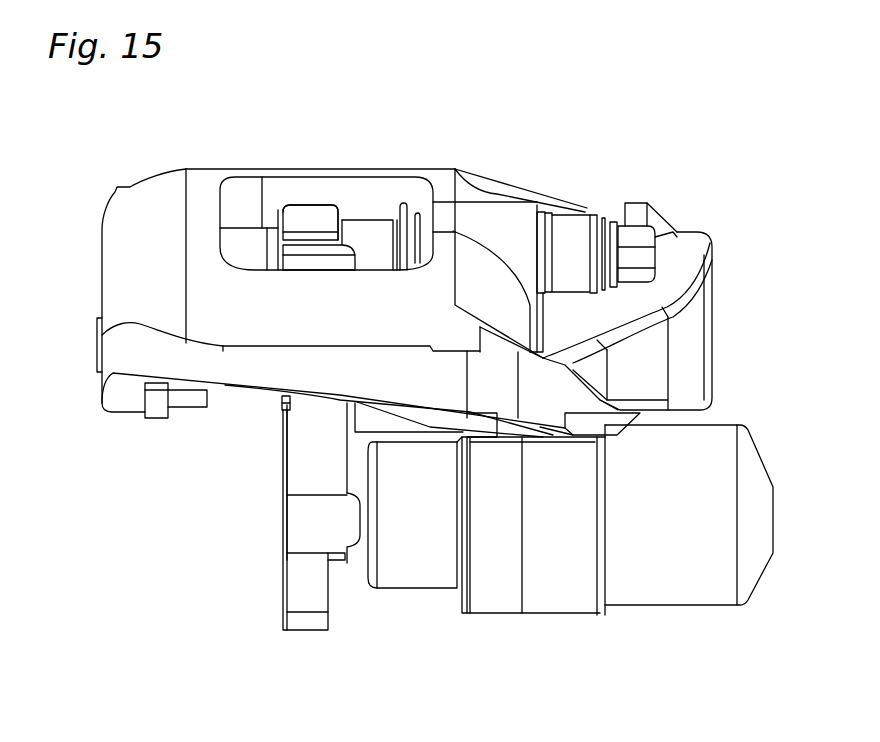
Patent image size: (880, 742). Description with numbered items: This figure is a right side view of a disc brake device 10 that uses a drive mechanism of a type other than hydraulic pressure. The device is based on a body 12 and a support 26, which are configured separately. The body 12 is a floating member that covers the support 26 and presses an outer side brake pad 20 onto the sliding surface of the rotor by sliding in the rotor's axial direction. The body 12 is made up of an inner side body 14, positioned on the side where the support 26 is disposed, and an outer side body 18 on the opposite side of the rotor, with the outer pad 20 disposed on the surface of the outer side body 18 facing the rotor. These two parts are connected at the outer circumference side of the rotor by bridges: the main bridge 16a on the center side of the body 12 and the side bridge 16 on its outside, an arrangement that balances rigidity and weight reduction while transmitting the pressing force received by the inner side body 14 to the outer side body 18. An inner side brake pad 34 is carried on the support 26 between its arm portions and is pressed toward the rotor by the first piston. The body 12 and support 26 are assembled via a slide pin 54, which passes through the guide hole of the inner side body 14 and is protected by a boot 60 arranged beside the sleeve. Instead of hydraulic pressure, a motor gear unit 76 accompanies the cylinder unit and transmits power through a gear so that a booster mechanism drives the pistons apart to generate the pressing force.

The disc brake device 10 is at (490, 128).
The body 12 is at (220, 168).
The inner side body 14 is at (697, 344).
The side bridge 16 is at (301, 313).
The main bridge 16a is at (360, 187).
The outer side body 18 is at (101, 272).
The outer side brake pad 20 is at (160, 421).
The support 26 is at (281, 596).
The inner side brake pad 34 is at (276, 407).
The slide pin 54 is at (638, 250).
The boot 60 is at (557, 228).
The motor gear unit 76 is at (555, 619).